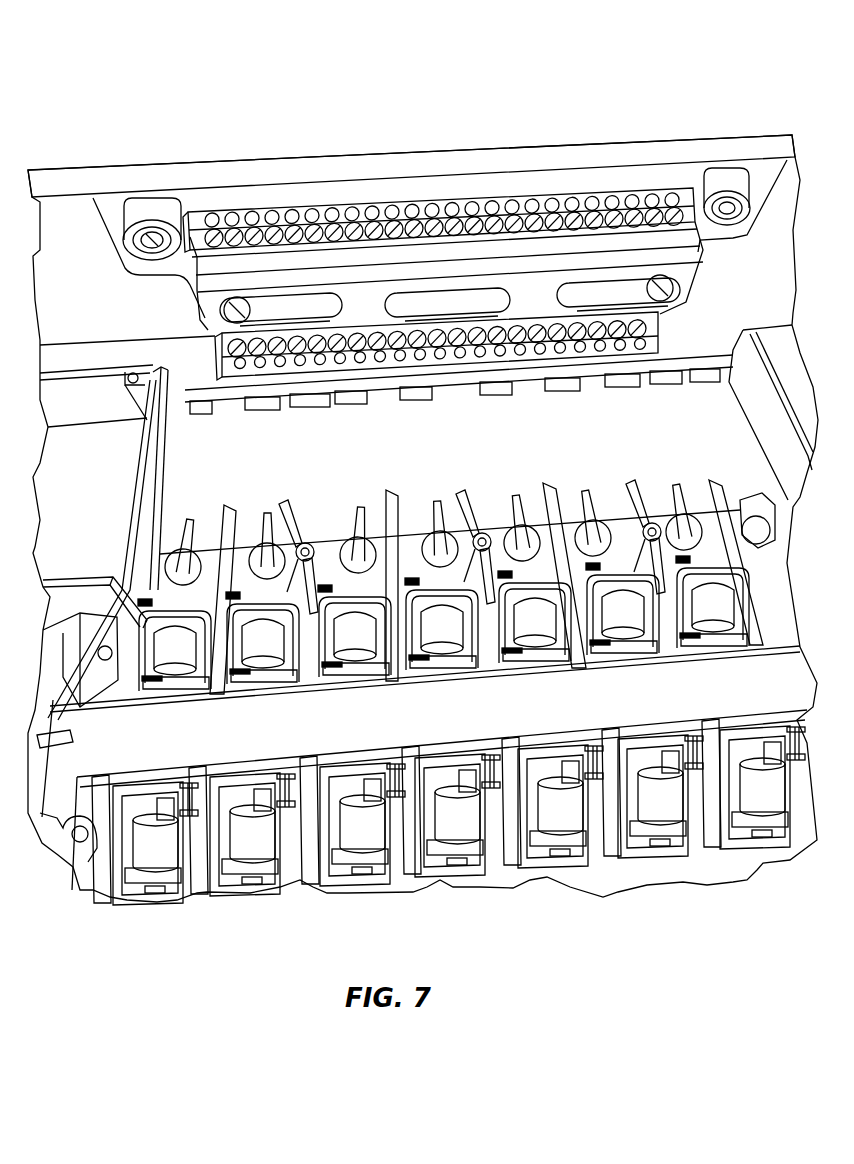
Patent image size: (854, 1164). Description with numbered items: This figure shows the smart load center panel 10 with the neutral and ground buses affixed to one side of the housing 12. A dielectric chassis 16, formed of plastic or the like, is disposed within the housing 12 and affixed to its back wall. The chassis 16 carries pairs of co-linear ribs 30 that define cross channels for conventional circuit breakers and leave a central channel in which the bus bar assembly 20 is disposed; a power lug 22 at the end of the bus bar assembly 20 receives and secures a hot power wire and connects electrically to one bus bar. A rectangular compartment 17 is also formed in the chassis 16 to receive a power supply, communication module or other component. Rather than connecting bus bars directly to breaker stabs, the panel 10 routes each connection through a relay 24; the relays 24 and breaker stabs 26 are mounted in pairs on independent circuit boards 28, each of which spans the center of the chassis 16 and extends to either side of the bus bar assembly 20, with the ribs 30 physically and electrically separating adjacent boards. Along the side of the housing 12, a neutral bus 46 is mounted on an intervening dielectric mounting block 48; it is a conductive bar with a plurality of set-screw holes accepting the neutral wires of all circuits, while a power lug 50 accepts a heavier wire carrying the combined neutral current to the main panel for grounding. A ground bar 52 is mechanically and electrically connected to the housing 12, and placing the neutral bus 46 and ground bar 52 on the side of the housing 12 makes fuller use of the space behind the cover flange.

The smart load center panel 10 is at (621, 106).
The housing 12 is at (677, 152).
The dielectric chassis 16 is at (467, 561).
The rectangular compartment 17 is at (106, 458).
The bus bar assembly 20 is at (540, 711).
The power lug 22 is at (50, 613).
The relay 24 is at (368, 633).
The breaker stab 26 is at (585, 522).
The circuit board 28 is at (496, 537).
The rib 30 is at (654, 522).
The neutral bus 46 is at (453, 198).
The dielectric mounting block 48 is at (365, 312).
The power lug 50 is at (237, 323).
The ground bar 52 is at (658, 300).